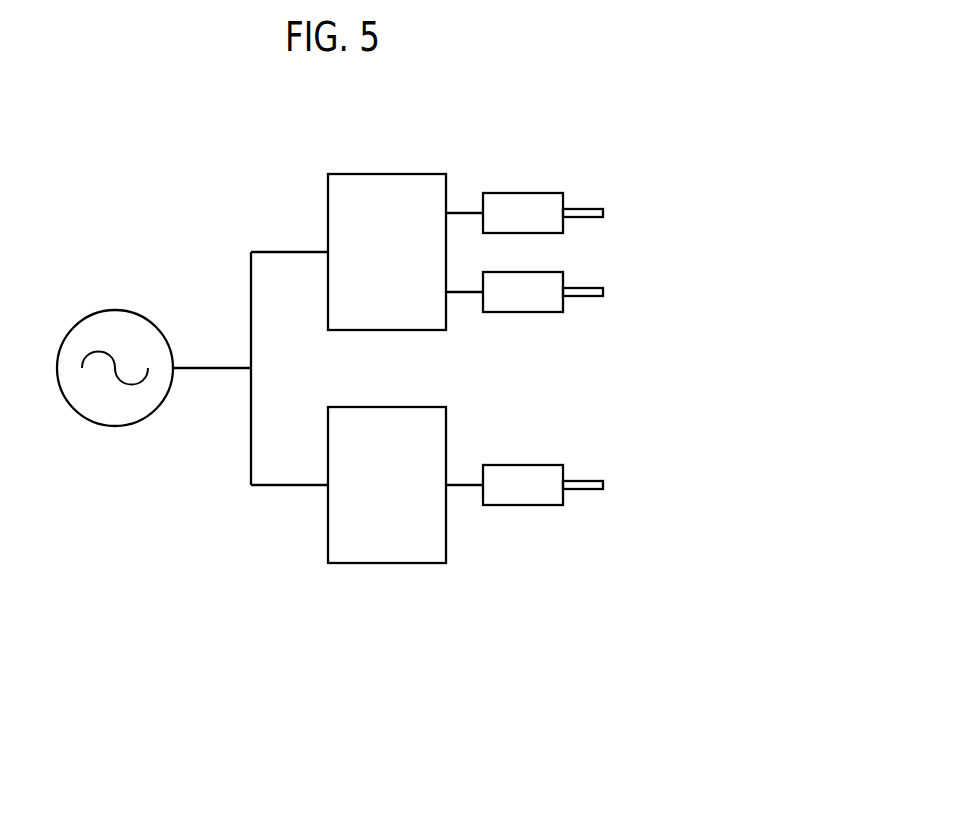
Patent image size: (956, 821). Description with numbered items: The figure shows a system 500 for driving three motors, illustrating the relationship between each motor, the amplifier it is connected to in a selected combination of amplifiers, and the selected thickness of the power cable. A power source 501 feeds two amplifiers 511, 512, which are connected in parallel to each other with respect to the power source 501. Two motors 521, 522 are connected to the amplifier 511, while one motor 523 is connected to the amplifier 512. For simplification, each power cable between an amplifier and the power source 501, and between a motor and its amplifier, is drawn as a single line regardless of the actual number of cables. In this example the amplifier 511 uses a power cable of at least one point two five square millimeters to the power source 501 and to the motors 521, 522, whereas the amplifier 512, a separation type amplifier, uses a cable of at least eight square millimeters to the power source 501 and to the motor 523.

The system 500 is at (538, 722).
The power source 501 is at (113, 427).
The amplifier 511 is at (388, 331).
The amplifier 512 is at (395, 564).
The motor 521 is at (530, 192).
The motor 522 is at (523, 313).
The motor 523 is at (522, 506).